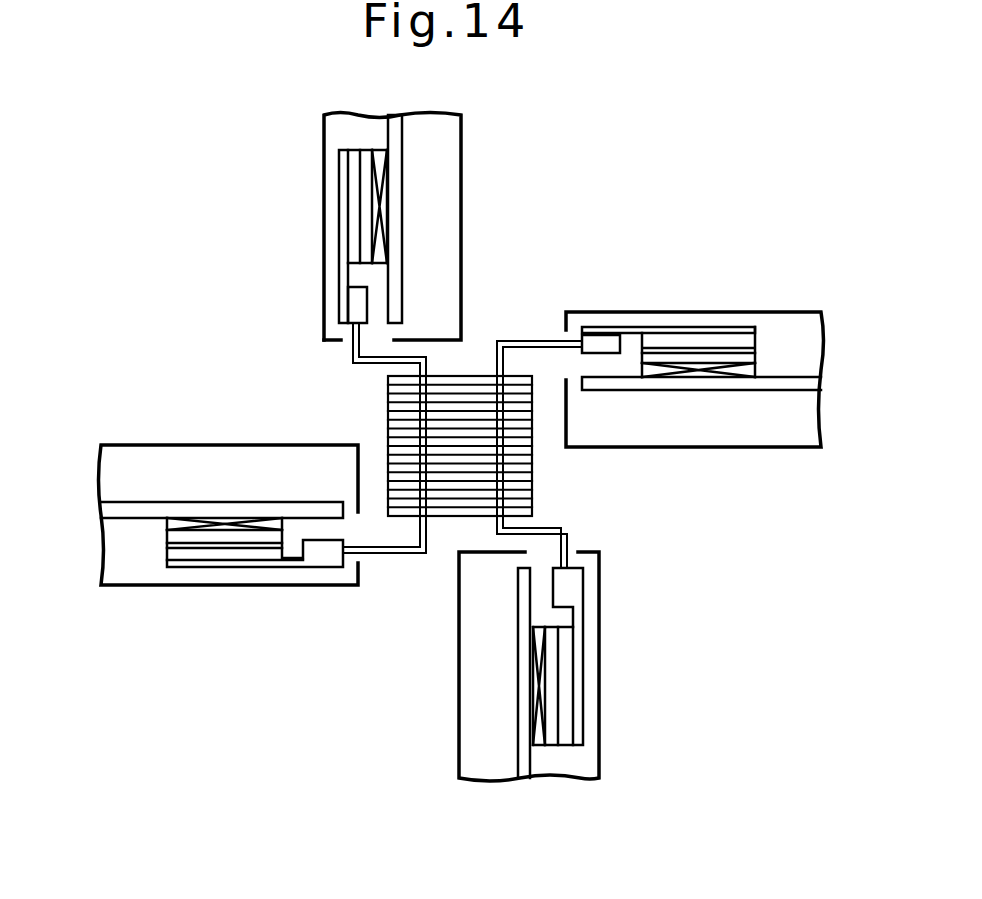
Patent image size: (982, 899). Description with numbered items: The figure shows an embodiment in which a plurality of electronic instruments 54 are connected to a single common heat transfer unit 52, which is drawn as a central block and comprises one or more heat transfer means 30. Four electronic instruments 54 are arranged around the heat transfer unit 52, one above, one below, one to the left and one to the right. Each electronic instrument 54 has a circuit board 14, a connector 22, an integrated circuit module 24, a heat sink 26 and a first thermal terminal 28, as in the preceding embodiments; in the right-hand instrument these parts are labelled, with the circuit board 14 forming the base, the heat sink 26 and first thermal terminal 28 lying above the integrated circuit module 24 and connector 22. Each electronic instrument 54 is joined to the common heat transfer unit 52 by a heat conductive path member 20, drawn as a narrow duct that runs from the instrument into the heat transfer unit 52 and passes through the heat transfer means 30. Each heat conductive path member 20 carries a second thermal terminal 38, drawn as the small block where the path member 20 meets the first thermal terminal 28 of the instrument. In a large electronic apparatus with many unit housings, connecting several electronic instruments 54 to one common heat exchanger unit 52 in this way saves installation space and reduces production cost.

The circuit board 14 is at (688, 390).
The heat conductive path member 20 is at (518, 340).
The connector 22 is at (757, 367).
The integrated circuit module 24 is at (745, 340).
The heat sink 26 is at (683, 330).
The first thermal terminal 28 is at (604, 328).
The heat transfer means 30 is at (520, 448).
The second thermal terminal 38 is at (592, 340).
The heat transfer unit 52 is at (522, 446).
The electronic instrument 54 is at (292, 240).